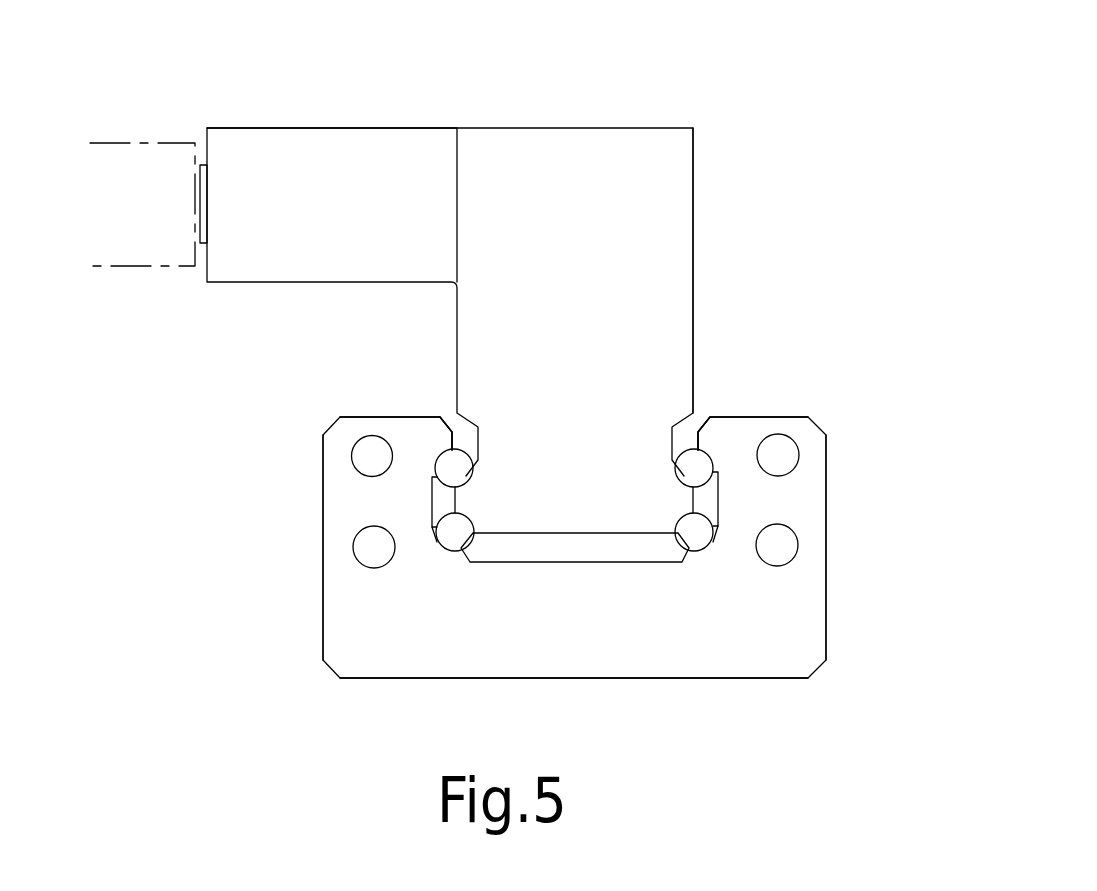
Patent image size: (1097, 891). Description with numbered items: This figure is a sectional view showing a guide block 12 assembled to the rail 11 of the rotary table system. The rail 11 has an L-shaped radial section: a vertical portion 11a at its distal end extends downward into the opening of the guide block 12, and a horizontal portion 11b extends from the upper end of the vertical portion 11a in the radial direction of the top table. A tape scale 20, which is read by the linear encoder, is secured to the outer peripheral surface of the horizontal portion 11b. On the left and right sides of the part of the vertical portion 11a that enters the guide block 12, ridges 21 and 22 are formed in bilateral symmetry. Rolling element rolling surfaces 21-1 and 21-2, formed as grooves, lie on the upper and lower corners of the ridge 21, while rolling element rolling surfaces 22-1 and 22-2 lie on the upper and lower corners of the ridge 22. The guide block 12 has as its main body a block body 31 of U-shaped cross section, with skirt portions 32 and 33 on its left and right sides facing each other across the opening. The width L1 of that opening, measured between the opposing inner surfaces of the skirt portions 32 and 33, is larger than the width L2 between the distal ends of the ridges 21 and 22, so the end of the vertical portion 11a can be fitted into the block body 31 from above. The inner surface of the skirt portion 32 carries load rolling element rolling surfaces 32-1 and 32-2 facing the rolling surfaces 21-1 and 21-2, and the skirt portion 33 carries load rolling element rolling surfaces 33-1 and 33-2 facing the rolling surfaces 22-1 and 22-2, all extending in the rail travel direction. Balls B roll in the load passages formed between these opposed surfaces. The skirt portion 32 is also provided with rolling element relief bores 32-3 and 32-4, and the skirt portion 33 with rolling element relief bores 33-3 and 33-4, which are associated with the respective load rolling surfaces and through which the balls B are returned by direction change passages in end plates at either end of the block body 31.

The rail 11 is at (517, 123).
The vertical portion 11a is at (694, 310).
The horizontal portion 11b is at (378, 148).
The guide block 12 is at (577, 684).
The tape scale 20 is at (200, 190).
The ridge 21 is at (450, 498).
The rolling element rolling surface 21-1 is at (462, 458).
The rolling element rolling surface 21-2 is at (450, 543).
The ridge 22 is at (700, 493).
The rolling element rolling surface 22-1 is at (684, 455).
The rolling element rolling surface 22-2 is at (691, 550).
The block body 31 is at (639, 661).
The skirt portion 32 is at (338, 528).
The load rolling element rolling surface 32-1 is at (446, 461).
The load rolling element rolling surface 32-2 is at (432, 547).
The rolling element relief bore 32-3 is at (372, 456).
The rolling element relief bore 32-4 is at (374, 547).
The skirt portion 33 is at (808, 517).
The load rolling element rolling surface 33-1 is at (714, 452).
The load rolling element rolling surface 33-2 is at (688, 553).
The rolling element relief bore 33-3 is at (778, 455).
The rolling element relief bore 33-4 is at (777, 545).
The balls B is at (445, 470).
The width of the opening of the block body L1 is at (695, 439).
The width between the distal ends of the ridges L2 is at (692, 502).